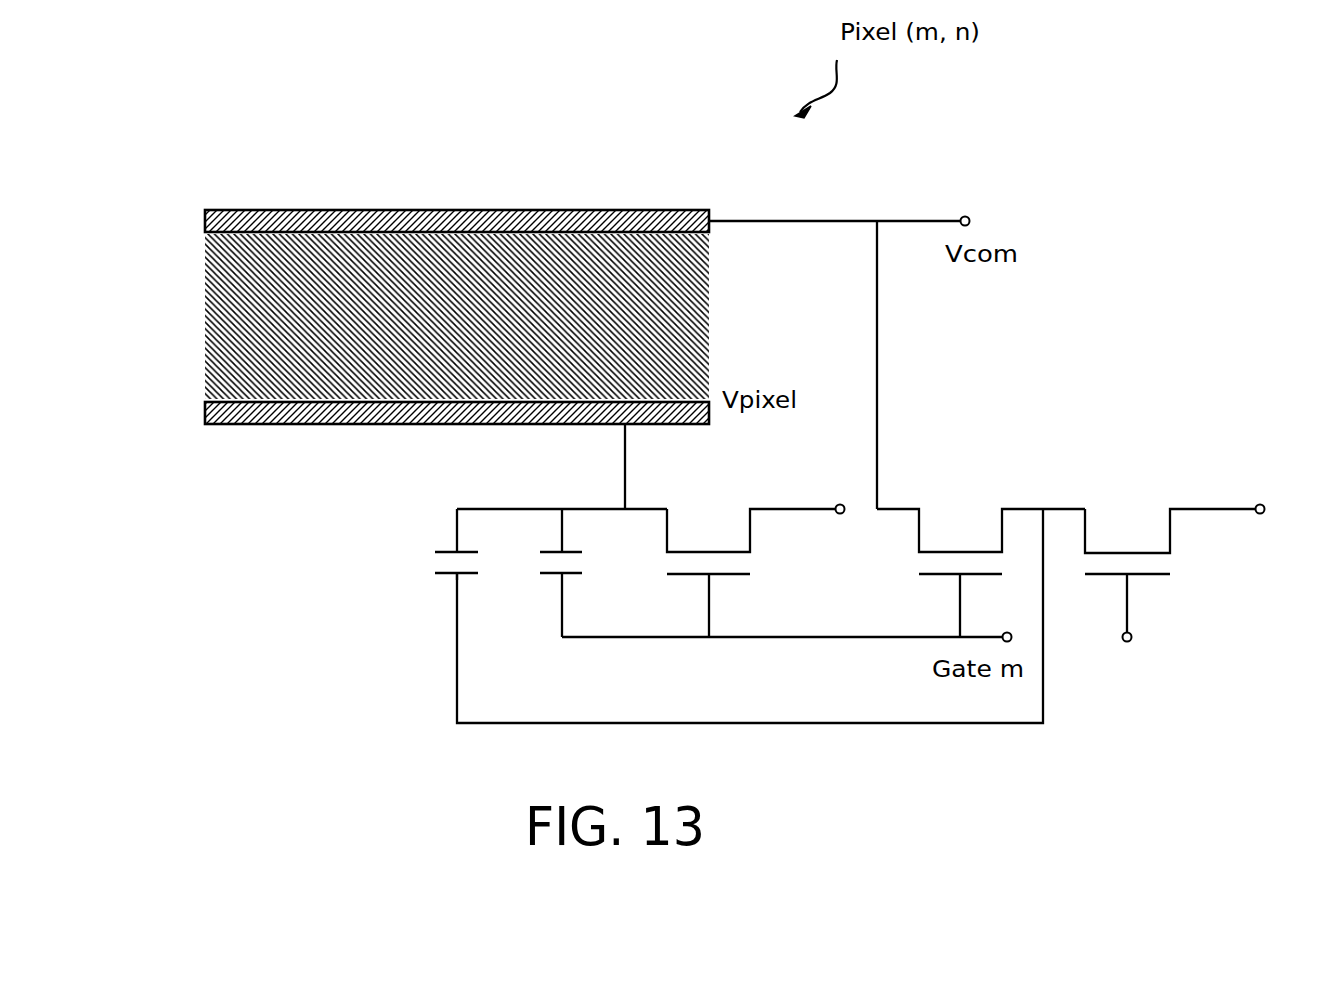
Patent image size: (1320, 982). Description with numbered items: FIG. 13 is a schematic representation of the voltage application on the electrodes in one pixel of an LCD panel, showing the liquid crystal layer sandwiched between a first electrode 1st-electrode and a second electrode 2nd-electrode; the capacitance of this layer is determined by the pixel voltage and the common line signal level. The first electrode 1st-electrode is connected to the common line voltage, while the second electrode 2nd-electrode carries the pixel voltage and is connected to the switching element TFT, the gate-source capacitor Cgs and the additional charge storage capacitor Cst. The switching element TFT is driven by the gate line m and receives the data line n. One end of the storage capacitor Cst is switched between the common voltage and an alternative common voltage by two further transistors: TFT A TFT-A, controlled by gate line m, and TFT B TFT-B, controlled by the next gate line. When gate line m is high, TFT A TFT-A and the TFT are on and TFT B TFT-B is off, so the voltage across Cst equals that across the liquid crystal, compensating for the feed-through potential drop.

The first electrode 1st-electrode is at (457, 202).
The second electrode 2nd-electrode is at (457, 429).
The charge storage capacitor Cst is at (430, 544).
The gate-source capacitor Cgs is at (590, 573).
The switching element TFT is at (765, 557).
The TFT A TFT-A is at (981, 557).
The TFT B TFT-B is at (1185, 577).